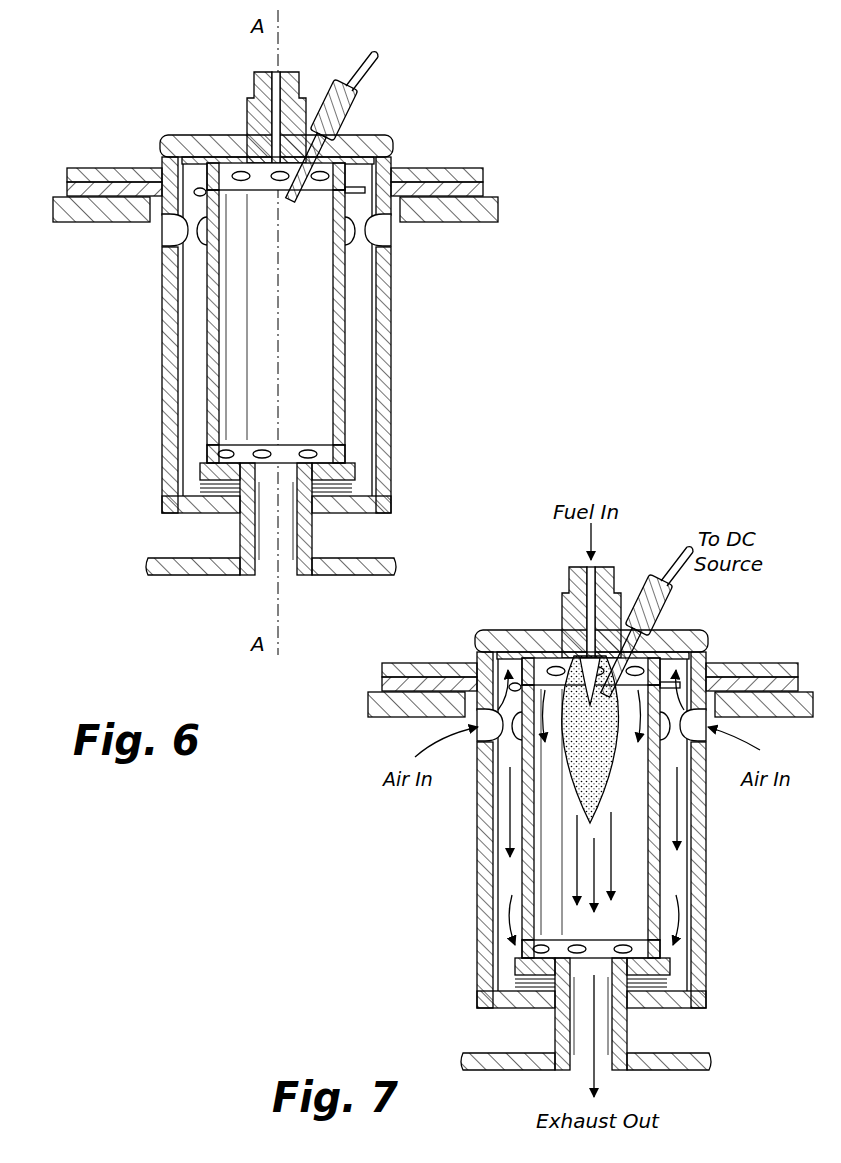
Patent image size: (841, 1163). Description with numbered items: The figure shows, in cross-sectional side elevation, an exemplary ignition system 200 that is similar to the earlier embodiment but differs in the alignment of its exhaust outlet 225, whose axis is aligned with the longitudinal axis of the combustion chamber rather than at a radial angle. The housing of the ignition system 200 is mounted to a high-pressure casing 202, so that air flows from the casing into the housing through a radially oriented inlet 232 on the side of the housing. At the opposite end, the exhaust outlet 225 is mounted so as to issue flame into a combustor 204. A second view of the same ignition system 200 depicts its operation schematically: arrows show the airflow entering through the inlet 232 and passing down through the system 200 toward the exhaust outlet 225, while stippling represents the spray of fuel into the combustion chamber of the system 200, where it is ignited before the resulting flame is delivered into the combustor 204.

In FIG. 6, the ignition system 200 is at (260, 321).
In FIG. 7, the ignition system 200 is at (534, 600).
In FIG. 6, the high-pressure casing 202 is at (77, 216).
In FIG. 6, the combustor 204 is at (165, 572).
In FIG. 6, the exhaust outlet 225 is at (248, 540).
In FIG. 6, the radially oriented inlet 232 is at (162, 238).